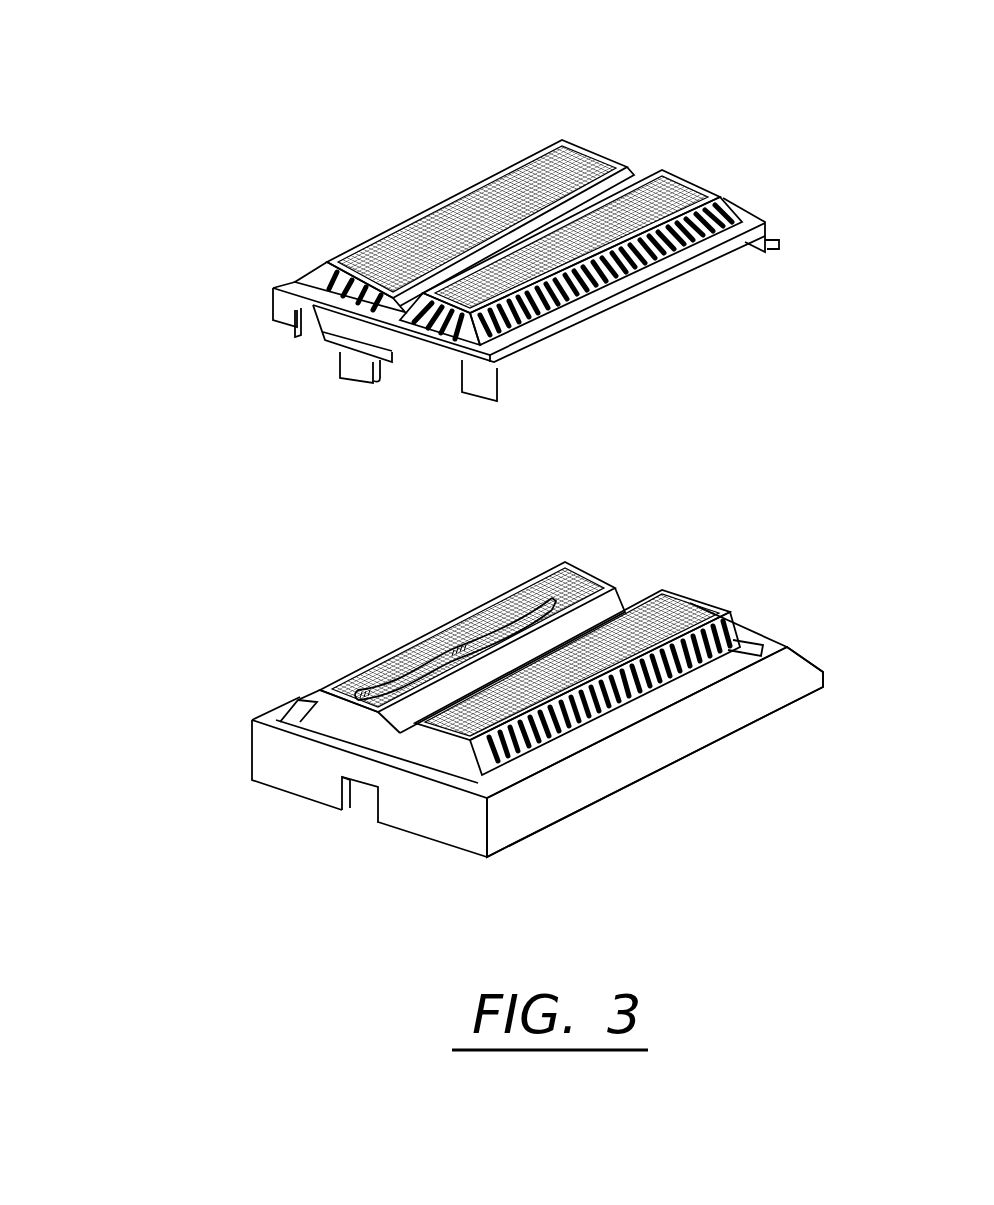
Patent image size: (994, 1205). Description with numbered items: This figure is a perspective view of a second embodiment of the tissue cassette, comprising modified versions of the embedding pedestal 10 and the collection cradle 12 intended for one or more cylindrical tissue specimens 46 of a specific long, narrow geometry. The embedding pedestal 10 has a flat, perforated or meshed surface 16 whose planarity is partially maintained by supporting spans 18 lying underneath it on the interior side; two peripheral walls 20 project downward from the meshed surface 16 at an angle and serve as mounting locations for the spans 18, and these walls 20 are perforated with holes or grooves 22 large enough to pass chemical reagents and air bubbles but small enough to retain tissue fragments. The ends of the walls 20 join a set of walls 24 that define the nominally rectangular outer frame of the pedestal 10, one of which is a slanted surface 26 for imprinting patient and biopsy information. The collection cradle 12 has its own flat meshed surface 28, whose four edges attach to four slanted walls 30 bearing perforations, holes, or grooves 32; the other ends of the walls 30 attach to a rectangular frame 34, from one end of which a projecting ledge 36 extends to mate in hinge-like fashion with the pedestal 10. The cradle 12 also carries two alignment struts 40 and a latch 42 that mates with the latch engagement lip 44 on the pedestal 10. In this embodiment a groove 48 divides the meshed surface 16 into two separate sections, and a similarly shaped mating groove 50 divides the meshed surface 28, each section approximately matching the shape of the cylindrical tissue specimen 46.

The embedding pedestal 10 is at (152, 548).
The collection cradle 12 is at (155, 113).
The perforated or meshed surface 16 is at (565, 590).
The supporting spans 18 is at (340, 712).
The peripheral walls 20 is at (530, 748).
The holes or grooves 22 is at (618, 700).
The set of walls 24 is at (522, 820).
The slanted surface 26 is at (808, 658).
The perforated or meshed surface 28 is at (555, 165).
The slanted walls 30 is at (313, 279).
The perforations, holes, or grooves 32 is at (323, 268).
The rectangular frame 34 is at (622, 298).
The projecting ledge 36 is at (772, 252).
The alignment struts 40 is at (283, 315).
The latch 42 is at (350, 370).
The latch engagement lip 44 is at (362, 790).
The cylindrical tissue specimen 46 is at (443, 652).
The groove 48 is at (620, 600).
The mating groove 50 is at (622, 178).